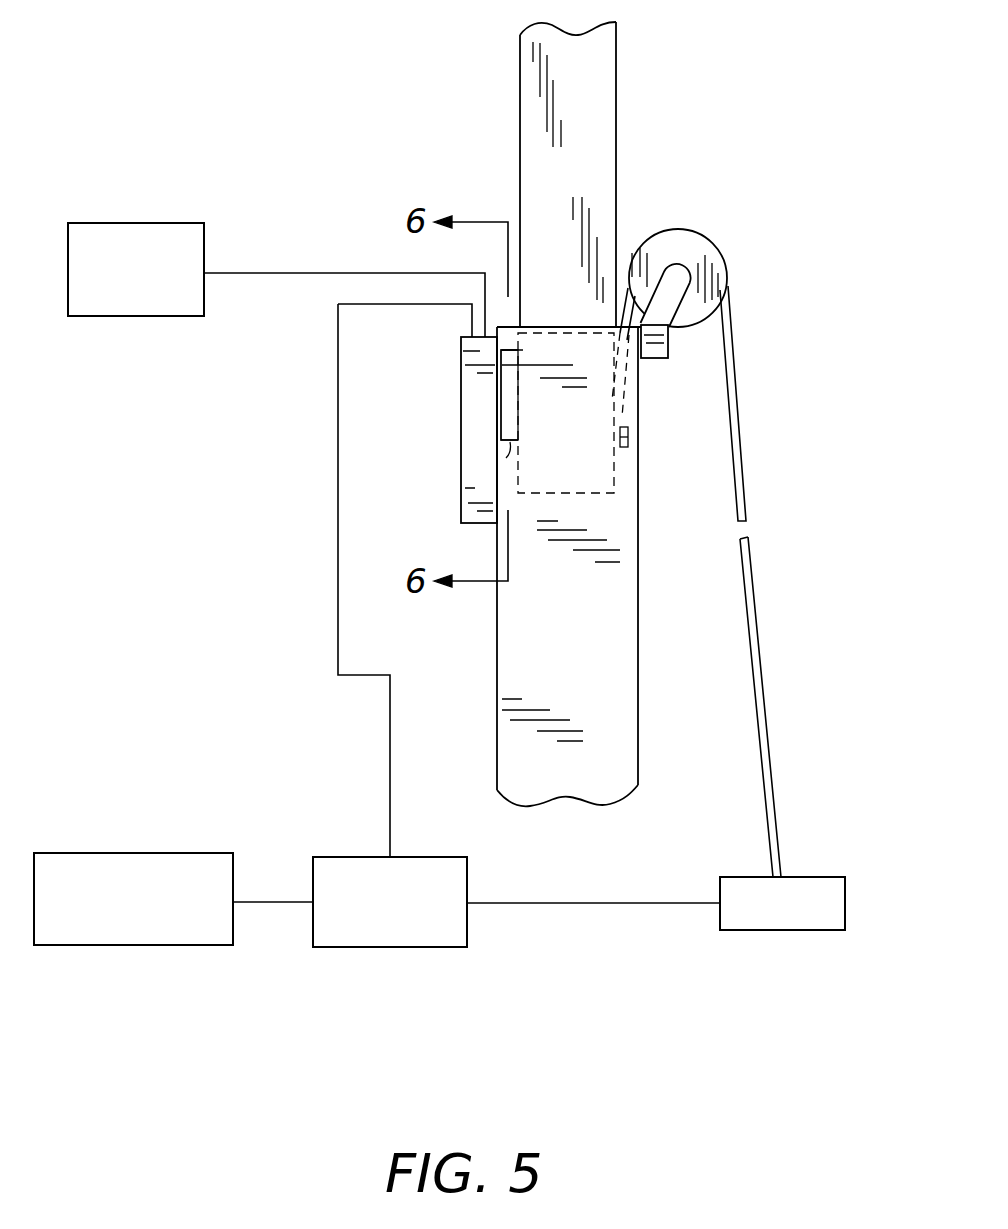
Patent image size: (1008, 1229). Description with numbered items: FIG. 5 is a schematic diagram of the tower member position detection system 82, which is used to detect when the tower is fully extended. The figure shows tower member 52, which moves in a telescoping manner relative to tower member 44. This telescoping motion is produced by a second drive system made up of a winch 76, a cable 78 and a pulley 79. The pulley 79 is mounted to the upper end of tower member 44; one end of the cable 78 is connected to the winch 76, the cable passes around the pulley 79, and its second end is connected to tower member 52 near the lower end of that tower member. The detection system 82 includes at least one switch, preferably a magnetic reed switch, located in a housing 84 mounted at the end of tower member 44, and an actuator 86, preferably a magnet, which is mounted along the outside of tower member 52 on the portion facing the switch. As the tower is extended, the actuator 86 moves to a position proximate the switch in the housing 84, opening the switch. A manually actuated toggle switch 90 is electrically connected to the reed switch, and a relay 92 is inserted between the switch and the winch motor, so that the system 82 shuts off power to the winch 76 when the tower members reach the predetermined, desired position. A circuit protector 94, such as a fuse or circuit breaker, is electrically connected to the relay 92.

The tower member position detection system 82 is at (193, 108).
The toggle switch 90 is at (140, 230).
The circuit protector 94 is at (180, 860).
The relay 92 is at (358, 863).
The winch 76 is at (812, 885).
The tower member 44 is at (612, 688).
The housing 84 is at (473, 437).
The actuator 86 is at (513, 443).
The tower member 52 is at (600, 133).
The cable 78 is at (737, 392).
The pulley 79 is at (700, 255).